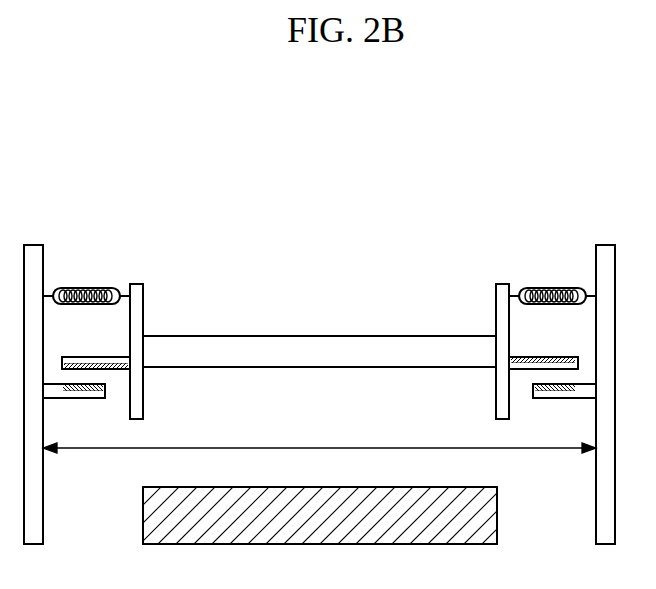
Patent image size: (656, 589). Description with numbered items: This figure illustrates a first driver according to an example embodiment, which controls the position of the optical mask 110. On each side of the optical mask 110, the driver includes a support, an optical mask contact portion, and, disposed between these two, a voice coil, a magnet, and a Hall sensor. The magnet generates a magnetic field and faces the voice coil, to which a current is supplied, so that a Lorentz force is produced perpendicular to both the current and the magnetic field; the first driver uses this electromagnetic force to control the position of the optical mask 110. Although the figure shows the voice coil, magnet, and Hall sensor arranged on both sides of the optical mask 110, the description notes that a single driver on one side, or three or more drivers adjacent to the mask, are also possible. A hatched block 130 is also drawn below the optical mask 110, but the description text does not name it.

The optical mask 110 is at (321, 335).
The substrate 130 is at (343, 487).